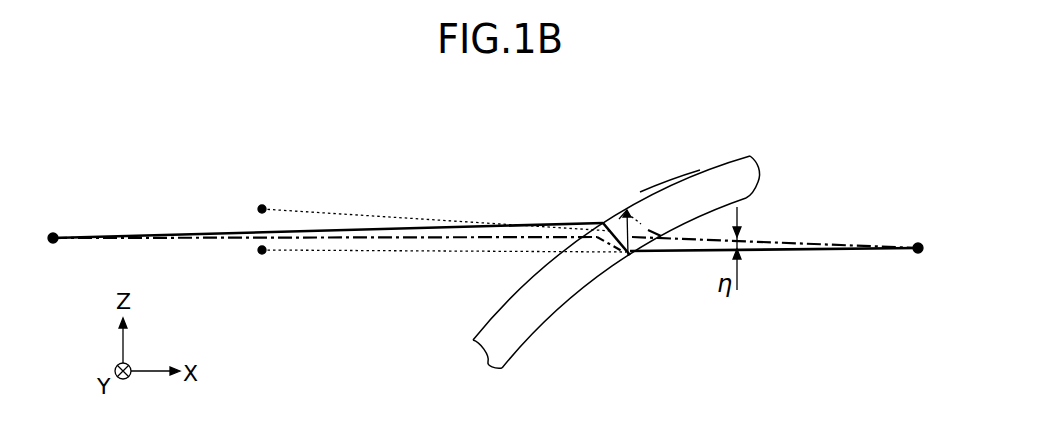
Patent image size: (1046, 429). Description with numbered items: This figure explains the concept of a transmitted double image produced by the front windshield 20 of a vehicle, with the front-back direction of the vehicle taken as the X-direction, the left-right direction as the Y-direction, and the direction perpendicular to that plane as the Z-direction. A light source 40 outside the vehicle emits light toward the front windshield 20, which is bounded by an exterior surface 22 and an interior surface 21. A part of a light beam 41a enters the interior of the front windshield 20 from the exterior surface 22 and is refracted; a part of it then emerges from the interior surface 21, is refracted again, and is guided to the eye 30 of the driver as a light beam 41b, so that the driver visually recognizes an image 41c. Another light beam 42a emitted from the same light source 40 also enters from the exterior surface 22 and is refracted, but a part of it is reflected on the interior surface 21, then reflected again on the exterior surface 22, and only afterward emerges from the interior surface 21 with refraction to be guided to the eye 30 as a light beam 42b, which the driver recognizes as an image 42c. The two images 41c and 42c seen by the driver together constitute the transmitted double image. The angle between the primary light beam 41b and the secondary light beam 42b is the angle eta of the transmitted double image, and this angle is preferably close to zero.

The front windshield 20 is at (750, 157).
The interior surface 21 is at (747, 198).
The exterior surface 22 is at (687, 176).
The eye 30 is at (919, 246).
The light source 40 is at (54, 236).
The light beam 41a is at (236, 230).
The light beam 41b is at (766, 253).
The image 41c is at (263, 255).
The light beam 42a is at (215, 245).
The light beam 42b is at (780, 238).
The image 42c is at (263, 206).